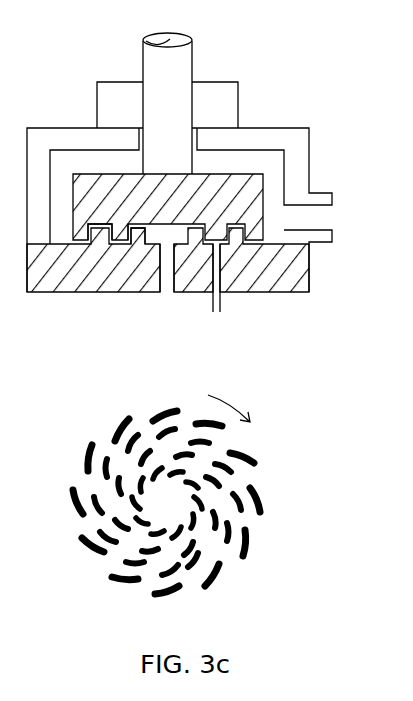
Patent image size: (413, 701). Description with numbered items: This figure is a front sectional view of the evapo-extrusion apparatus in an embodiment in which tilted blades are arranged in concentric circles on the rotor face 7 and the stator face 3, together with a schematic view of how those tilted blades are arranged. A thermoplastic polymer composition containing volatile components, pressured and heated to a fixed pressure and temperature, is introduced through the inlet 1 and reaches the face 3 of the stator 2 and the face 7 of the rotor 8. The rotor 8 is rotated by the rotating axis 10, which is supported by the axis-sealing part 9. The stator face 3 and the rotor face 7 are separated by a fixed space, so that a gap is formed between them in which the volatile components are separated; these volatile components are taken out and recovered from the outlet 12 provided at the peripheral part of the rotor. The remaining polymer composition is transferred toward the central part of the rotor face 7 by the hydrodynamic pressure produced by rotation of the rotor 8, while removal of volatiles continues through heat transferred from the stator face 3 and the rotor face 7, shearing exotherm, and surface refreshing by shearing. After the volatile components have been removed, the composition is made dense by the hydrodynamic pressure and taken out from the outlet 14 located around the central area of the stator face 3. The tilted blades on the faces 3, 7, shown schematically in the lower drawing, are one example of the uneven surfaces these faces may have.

The inlet 1 is at (222, 323).
The stator 2 is at (93, 260).
The stator face 3 is at (181, 246).
The rotor face 7 is at (170, 233).
The rotor 8 is at (168, 207).
The axis-sealing part 9 is at (167, 105).
The rotating axis 10 is at (167, 103).
The outlet 12 is at (333, 218).
The outlet 14 is at (167, 297).